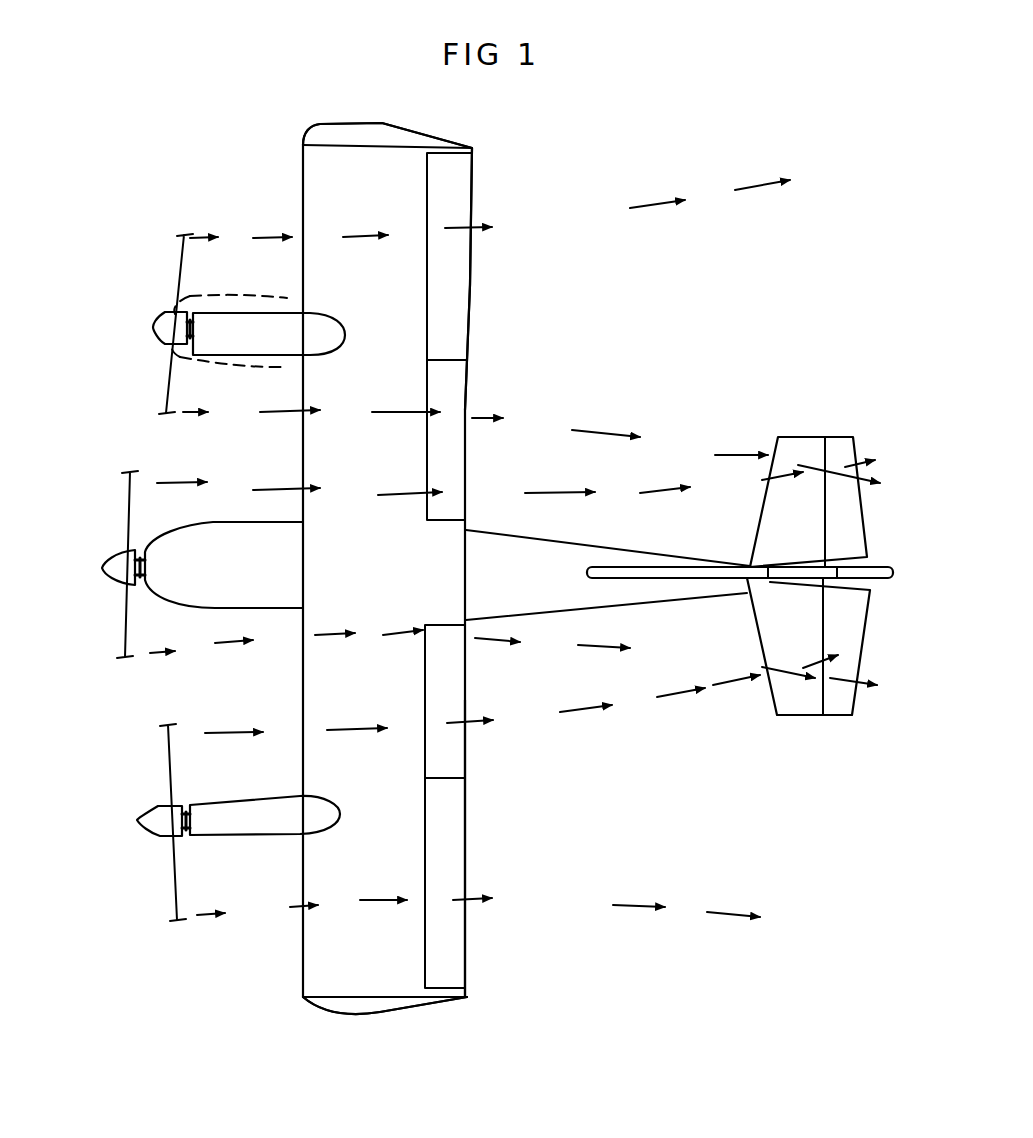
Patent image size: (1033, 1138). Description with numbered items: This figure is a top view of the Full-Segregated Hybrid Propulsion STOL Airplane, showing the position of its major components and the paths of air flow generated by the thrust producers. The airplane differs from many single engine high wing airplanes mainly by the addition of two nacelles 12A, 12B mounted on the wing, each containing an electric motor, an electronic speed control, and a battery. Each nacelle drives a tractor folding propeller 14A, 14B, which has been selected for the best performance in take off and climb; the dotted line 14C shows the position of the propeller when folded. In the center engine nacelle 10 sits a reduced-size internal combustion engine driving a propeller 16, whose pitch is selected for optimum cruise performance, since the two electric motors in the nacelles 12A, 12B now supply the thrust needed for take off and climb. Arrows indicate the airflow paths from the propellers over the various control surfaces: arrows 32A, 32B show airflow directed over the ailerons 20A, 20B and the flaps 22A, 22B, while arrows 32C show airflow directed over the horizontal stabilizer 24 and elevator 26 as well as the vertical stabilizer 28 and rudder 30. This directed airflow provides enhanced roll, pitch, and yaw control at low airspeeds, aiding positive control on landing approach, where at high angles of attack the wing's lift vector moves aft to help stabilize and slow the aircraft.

The center engine nacelle 10 is at (177, 608).
The nacelle 12A is at (260, 835).
The nacelle 12B is at (220, 315).
The tractor folding propeller 14A is at (170, 860).
The tractor folding propeller 14B is at (180, 287).
The folded propeller position 14C is at (237, 365).
The propeller 16 is at (128, 583).
The aileron 20A is at (466, 845).
The aileron 20B is at (472, 285).
The flap 22A is at (465, 675).
The flap 22B is at (465, 472).
The horizontal stabilizer 24 is at (753, 522).
The elevator 26 is at (842, 437).
The vertical stabilizer 28 is at (807, 578).
The rudder 30 is at (890, 573).
The airflow arrows 32A is at (718, 915).
The airflow arrows 32B is at (745, 188).
The airflow arrows 32C is at (647, 490).